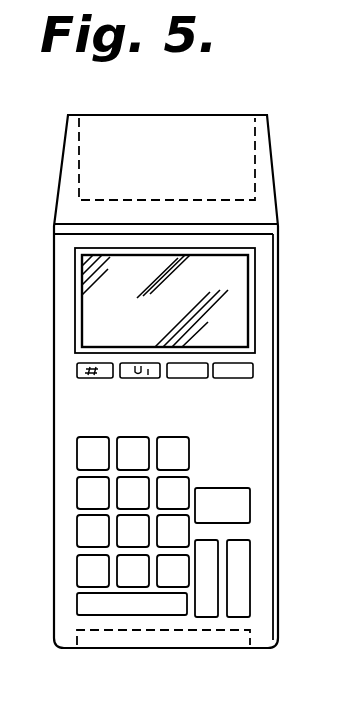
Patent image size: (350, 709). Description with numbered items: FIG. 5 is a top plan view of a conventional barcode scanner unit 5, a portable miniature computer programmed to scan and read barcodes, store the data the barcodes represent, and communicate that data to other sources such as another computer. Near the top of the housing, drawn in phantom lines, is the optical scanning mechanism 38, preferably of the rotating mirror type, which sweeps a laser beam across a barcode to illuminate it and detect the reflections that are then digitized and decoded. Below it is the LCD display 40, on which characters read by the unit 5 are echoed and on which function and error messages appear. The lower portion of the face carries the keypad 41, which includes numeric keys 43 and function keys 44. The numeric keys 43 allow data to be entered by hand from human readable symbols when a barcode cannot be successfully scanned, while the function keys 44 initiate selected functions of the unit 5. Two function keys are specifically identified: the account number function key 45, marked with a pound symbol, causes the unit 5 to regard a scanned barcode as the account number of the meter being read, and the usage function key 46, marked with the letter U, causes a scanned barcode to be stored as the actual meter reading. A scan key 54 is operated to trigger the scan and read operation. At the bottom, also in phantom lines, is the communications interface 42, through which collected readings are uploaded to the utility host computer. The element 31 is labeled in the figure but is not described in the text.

The barcode scanner unit 5 is at (280, 449).
The strap 31 is at (349, 578).
The optical scanning mechanism 38 is at (268, 140).
The LCD display 40 is at (238, 313).
The keypad 41 is at (77, 452).
The communications interface 42 is at (255, 642).
The numeric keys 43 is at (77, 527).
The function keys 44 is at (232, 378).
The account number function key 45 is at (77, 370).
The usage function key 46 is at (150, 378).
The scan key 54 is at (250, 505).